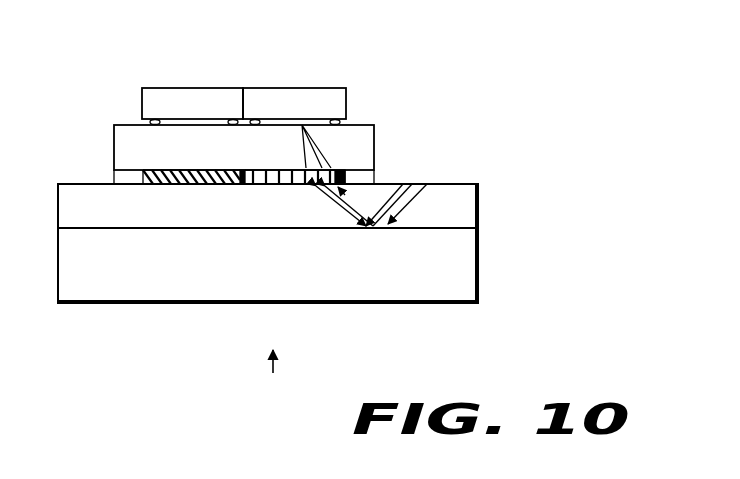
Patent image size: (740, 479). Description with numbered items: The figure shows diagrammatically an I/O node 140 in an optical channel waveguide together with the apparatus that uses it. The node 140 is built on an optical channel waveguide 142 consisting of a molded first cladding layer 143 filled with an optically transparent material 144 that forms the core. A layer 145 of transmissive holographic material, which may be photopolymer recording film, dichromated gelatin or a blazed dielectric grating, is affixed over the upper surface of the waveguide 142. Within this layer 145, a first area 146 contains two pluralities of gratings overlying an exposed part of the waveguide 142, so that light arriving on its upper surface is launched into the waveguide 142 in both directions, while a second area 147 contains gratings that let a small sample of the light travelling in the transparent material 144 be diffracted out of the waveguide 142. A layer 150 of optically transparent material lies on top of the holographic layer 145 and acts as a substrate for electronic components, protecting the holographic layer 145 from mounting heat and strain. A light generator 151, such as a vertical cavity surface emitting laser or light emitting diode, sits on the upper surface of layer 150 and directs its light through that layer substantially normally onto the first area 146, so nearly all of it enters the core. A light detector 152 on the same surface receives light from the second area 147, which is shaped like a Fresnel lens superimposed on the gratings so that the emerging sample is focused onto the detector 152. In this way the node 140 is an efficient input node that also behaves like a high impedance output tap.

The I/O node 140 is at (272, 382).
The optical channel waveguide 142 is at (333, 238).
The molded first cladding layer 143 is at (468, 268).
The optically transparent material 144 is at (468, 207).
The layer of transmissive holographic material 145 is at (376, 173).
The first area 146 is at (180, 187).
The second area 147 is at (278, 187).
The layer of optically transparent material 150 is at (118, 148).
The light generator 151 is at (177, 88).
The light detector 152 is at (278, 88).